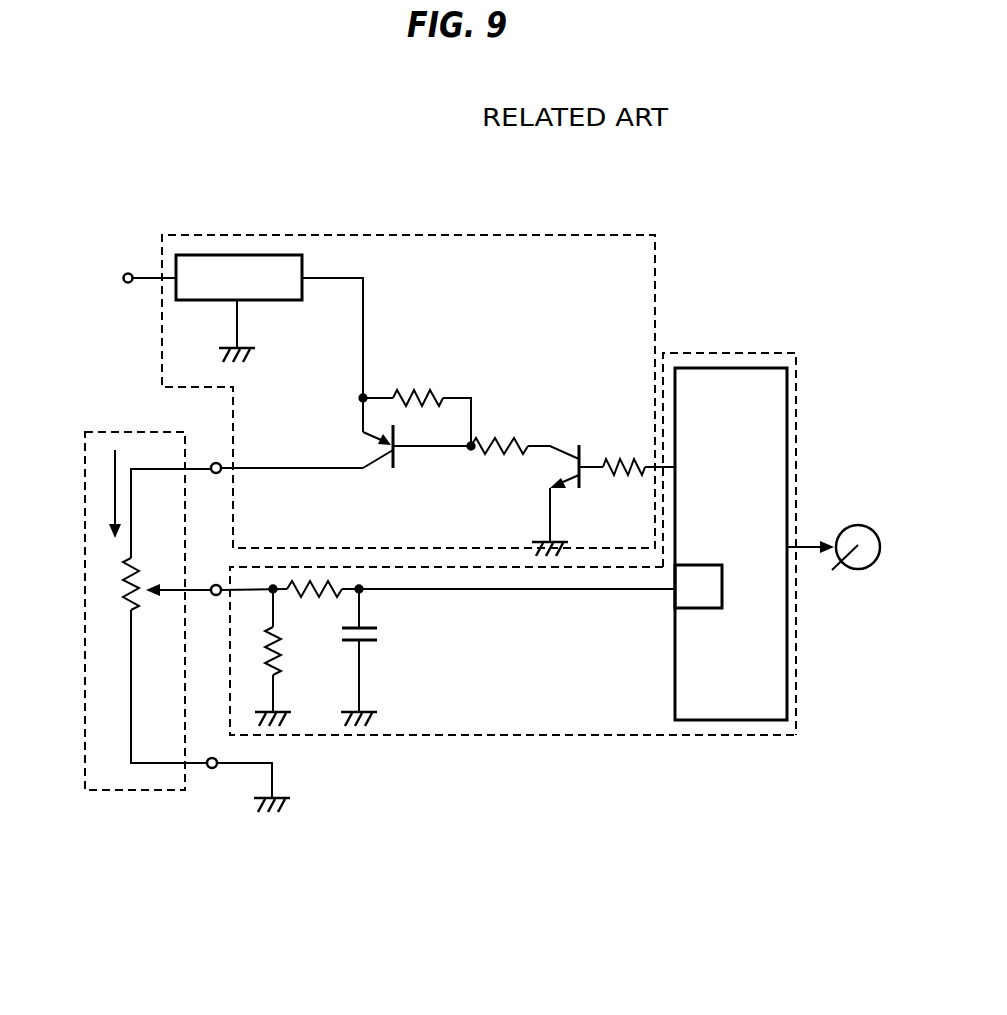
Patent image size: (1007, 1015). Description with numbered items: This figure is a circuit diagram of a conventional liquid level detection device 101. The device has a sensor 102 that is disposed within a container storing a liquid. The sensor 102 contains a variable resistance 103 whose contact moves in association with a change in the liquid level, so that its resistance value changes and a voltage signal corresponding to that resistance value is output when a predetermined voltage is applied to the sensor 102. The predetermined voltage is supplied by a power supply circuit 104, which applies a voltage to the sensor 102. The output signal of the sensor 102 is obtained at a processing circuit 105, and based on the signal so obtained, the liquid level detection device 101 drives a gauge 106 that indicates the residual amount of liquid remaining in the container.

The liquid level detection device 101 is at (733, 182).
The sensor 102 is at (152, 662).
The variable resistance 103 is at (118, 598).
The power supply circuit 104 is at (411, 225).
The processing circuit 105 is at (567, 750).
The gauge 106 is at (858, 525).